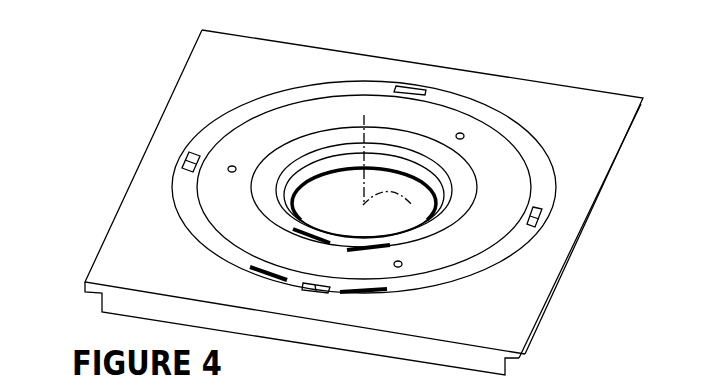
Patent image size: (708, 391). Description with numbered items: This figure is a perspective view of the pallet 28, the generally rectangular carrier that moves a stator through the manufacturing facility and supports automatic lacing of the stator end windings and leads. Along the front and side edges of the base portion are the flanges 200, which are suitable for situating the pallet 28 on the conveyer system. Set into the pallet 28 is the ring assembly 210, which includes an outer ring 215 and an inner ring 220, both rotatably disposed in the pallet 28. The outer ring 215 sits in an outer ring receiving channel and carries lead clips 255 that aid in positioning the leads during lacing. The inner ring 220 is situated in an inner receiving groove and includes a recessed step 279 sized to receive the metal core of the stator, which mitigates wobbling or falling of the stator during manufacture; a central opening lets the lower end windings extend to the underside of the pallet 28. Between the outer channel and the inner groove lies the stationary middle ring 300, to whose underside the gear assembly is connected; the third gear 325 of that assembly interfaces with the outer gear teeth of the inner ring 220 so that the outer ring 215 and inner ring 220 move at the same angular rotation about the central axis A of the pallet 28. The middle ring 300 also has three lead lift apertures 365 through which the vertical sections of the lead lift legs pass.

The pallet 28 is at (604, 145).
The flanges 200 is at (95, 286).
The third gear 325 is at (707, 390).
The ring assembly 210 is at (478, 92).
The outer ring 215 is at (516, 243).
The inner ring 220 is at (421, 238).
The middle ring 300 is at (497, 163).
The recessed step 279 is at (312, 173).
The lead clips 255 is at (184, 157).
The lead lift aperture 365 is at (232, 166).
The central axis A is at (395, 207).